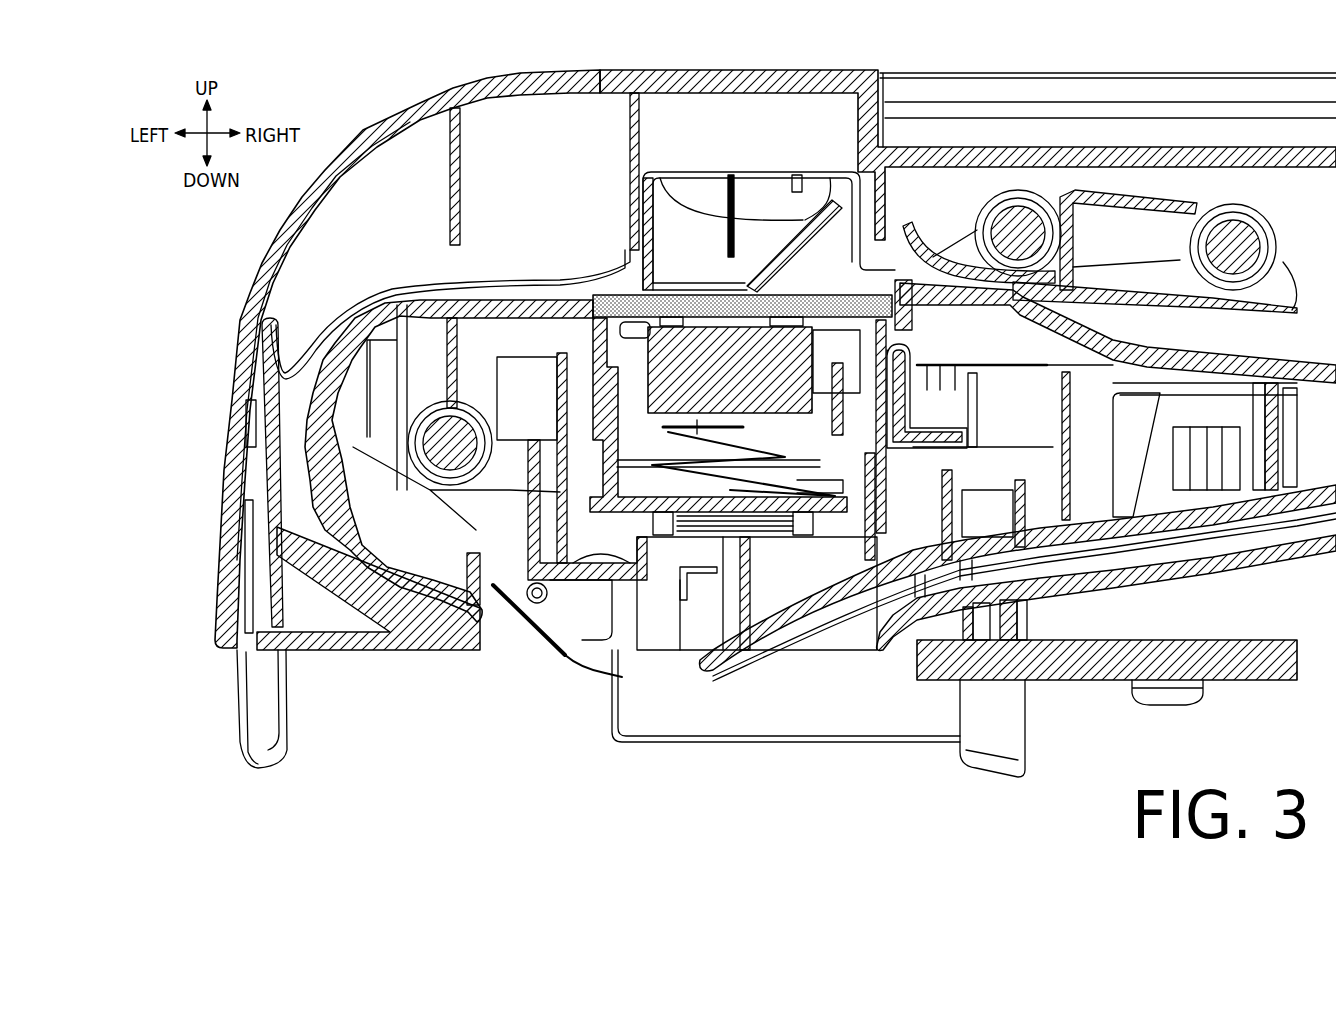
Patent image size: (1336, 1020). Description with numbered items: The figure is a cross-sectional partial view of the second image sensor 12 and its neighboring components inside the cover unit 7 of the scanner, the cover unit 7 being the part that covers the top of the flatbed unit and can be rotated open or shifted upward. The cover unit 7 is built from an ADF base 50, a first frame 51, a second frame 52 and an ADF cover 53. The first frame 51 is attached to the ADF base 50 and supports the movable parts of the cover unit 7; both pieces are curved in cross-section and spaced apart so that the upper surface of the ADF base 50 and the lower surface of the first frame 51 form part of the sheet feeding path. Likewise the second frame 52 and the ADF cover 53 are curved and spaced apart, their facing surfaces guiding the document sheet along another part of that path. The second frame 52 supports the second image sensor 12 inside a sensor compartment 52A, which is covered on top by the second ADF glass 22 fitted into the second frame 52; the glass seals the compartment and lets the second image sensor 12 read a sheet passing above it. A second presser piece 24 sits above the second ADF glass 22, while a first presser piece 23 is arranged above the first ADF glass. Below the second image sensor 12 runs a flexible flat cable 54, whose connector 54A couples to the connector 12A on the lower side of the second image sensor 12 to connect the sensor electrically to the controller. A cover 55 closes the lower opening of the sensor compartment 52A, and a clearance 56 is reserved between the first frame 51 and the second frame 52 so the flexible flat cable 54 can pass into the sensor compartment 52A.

The cover unit 7 is at (384, 96).
The ADF cover 53 is at (617, 68).
The second frame 52 is at (547, 302).
The second ADF glass 22 is at (597, 297).
The sensor compartment 52A is at (637, 328).
The second presser piece 24 is at (813, 236).
The second image sensor 12 is at (797, 337).
The connector 12A is at (748, 430).
The connector 54A is at (673, 418).
The flexible flat cable 54 is at (737, 486).
The cover 55 is at (640, 510).
The clearance 56 is at (858, 491).
The ADF base 50 is at (438, 648).
The first frame 51 is at (473, 622).
The first presser piece 23 is at (557, 658).